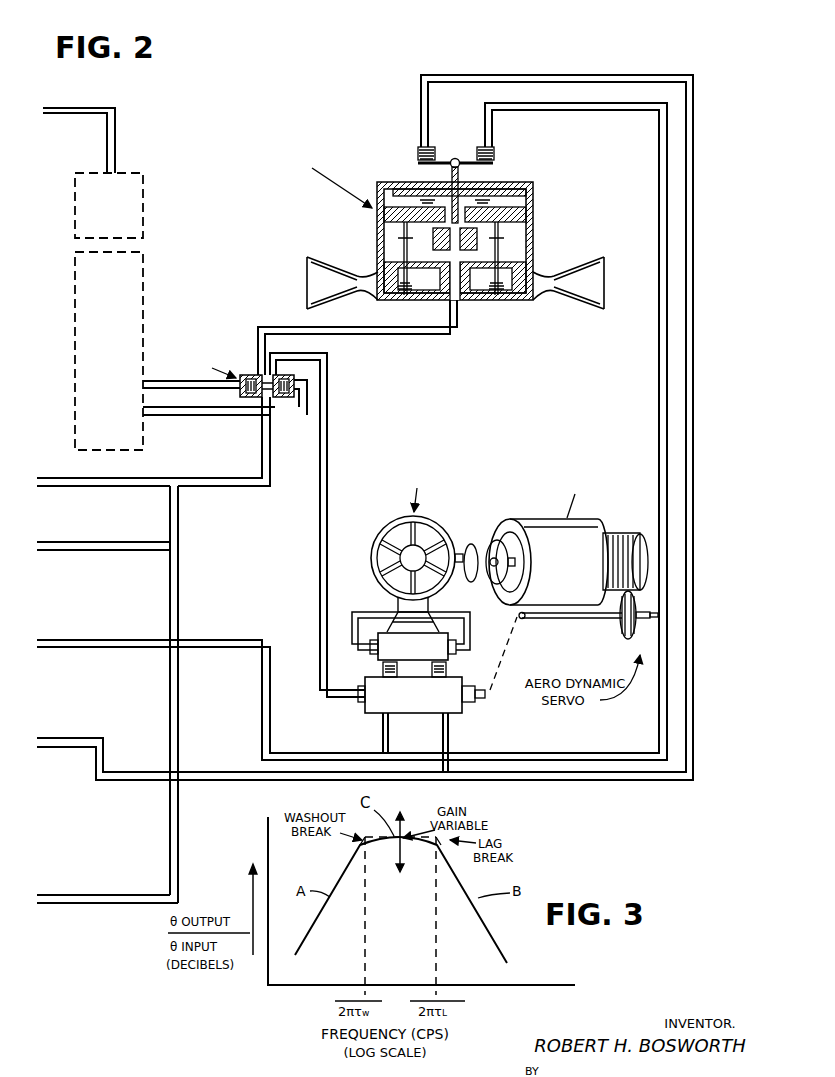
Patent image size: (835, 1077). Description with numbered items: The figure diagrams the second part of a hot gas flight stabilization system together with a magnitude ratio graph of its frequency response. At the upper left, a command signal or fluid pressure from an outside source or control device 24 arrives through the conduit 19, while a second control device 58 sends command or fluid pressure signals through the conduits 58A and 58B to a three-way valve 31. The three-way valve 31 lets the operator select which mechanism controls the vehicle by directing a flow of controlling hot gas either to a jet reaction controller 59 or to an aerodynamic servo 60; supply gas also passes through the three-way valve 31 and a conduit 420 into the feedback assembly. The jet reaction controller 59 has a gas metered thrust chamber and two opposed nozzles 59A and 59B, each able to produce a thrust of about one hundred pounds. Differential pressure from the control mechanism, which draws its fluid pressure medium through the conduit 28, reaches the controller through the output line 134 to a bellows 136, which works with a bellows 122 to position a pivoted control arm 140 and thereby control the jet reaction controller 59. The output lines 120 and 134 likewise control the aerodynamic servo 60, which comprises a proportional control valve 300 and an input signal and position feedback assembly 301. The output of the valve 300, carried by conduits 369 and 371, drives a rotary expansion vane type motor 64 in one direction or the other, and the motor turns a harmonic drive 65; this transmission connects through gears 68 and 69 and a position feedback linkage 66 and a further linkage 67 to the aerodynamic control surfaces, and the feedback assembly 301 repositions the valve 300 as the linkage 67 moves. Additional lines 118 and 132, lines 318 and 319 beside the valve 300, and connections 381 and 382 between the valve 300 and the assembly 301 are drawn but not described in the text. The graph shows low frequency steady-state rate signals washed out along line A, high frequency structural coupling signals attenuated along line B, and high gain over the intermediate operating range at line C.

The conduit 19 is at (70, 108).
The control device 24 is at (143, 216).
The control device 58 is at (143, 321).
The conduit 58A is at (176, 388).
The conduit 58B is at (202, 415).
The three-way selector valve 31 is at (248, 375).
The conduit 28 is at (56, 487).
The fluid conduit 118 is at (58, 551).
The output line 120 is at (58, 648).
The bellows 122 is at (496, 153).
The fluid conduit 132 is at (56, 904).
The output line 134 is at (565, 75).
The bellows 136 is at (416, 153).
The pivoted control arm 140 is at (451, 158).
The jet reaction controller 59 is at (540, 220).
The nozzle 59A is at (574, 262).
The nozzle 59B is at (338, 258).
The aerodynamic servo 60 is at (495, 460).
The rotary expansion vane type motor 64 is at (437, 522).
The harmonic drive 65 is at (530, 520).
The position feedback linkage 66 is at (572, 619).
The linkage 67 is at (646, 619).
The gear 68 is at (622, 632).
The gear 69 is at (628, 533).
The proportional control valve 300 is at (413, 646).
The input signal and position feedback assembly 301 is at (421, 724).
The conduit 318 is at (356, 645).
The conduit 319 is at (468, 644).
The conduit 369 is at (396, 612).
The conduit 371 is at (432, 612).
The connector 381 is at (383, 668).
The connector 382 is at (446, 669).
The conduit 420 is at (320, 557).